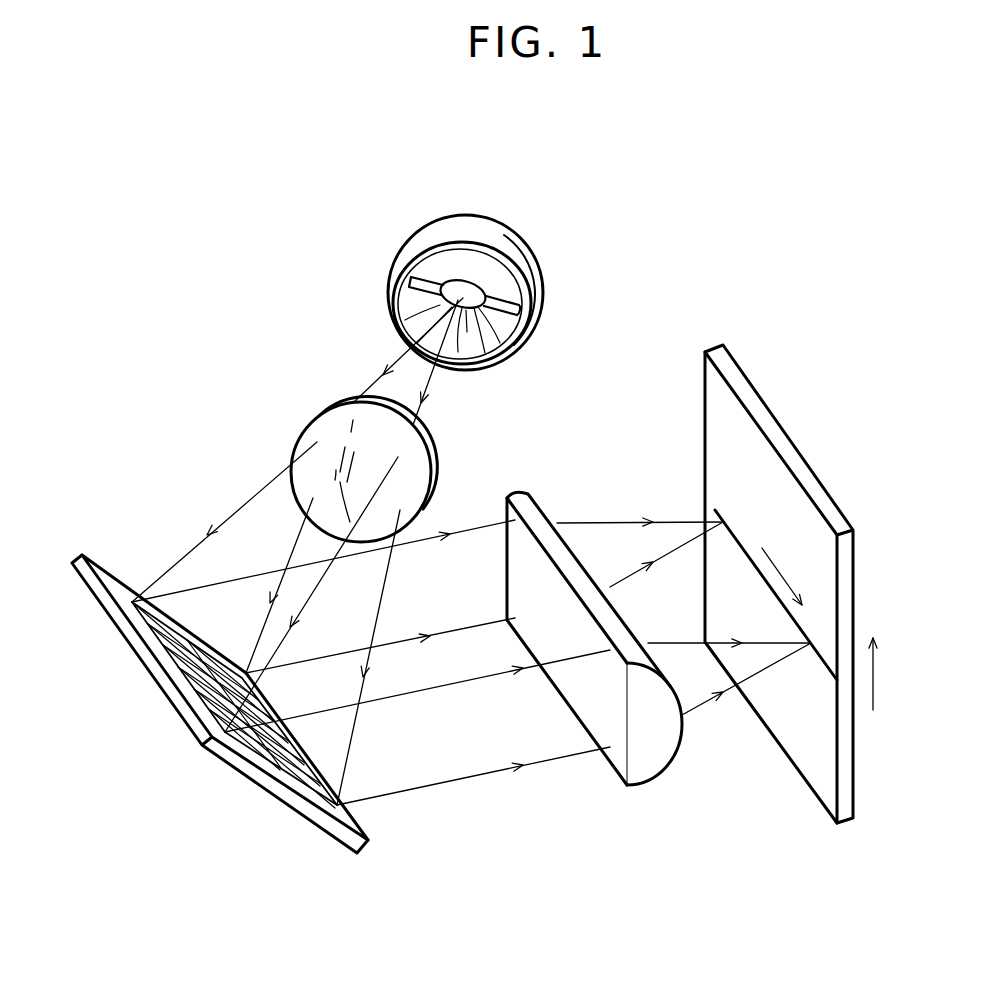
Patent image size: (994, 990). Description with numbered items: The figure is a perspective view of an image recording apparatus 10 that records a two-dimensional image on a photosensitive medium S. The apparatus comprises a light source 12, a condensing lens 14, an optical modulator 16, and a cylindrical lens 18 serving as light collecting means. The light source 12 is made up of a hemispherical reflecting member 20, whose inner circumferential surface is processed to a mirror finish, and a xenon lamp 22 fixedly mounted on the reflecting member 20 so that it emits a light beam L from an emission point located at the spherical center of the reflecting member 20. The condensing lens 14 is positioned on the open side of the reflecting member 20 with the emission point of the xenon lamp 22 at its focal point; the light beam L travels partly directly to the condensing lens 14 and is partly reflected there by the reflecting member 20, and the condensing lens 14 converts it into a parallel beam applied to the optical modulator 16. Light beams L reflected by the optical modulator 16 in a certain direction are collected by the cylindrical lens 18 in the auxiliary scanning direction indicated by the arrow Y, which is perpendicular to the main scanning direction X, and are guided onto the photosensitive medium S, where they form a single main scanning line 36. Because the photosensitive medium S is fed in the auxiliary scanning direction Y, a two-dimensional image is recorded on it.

The image recording apparatus 10 is at (689, 172).
The light source 12 is at (500, 213).
The condensing lens 14 is at (320, 413).
The optical modulator 16 is at (75, 563).
The cylindrical lens 18 is at (535, 502).
The hemispherical reflecting member 20 is at (430, 232).
The xenon lamp 22 is at (477, 306).
The main scanning line 36 is at (818, 654).
The photosensitive medium S is at (742, 383).
The light beam L is at (403, 357).
The main scanning direction X is at (782, 574).
The auxiliary scanning direction Y is at (885, 674).